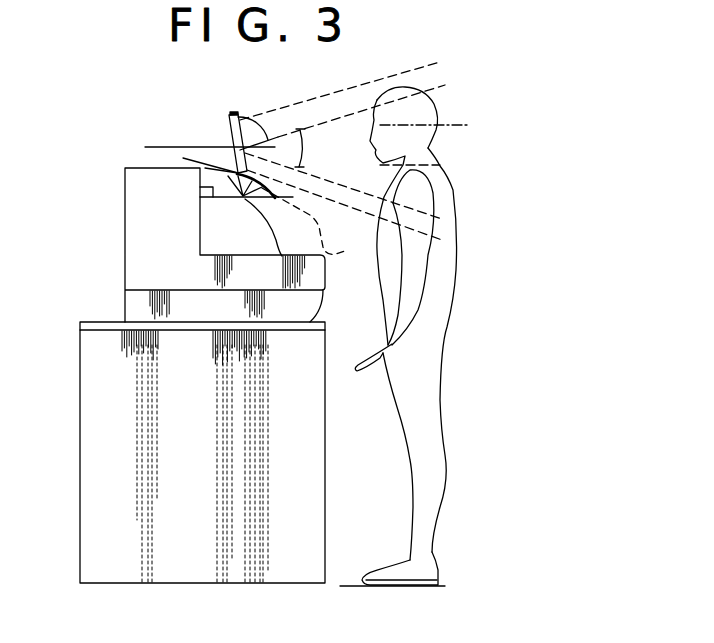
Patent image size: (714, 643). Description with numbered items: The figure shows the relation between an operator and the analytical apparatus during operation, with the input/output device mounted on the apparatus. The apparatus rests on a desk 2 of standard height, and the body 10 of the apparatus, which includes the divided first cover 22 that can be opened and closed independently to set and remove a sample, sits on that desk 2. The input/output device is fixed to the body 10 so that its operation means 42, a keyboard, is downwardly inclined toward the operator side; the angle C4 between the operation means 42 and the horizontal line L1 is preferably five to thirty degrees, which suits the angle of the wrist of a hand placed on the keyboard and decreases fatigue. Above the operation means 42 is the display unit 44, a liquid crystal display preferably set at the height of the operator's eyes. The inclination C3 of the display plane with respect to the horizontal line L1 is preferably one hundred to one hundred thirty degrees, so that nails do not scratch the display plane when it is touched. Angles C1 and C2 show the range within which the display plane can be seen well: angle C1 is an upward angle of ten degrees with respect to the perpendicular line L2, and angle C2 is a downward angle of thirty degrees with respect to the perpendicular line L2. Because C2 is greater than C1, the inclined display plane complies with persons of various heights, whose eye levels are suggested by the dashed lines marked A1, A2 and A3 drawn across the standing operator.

The desk 2 is at (88, 322).
The body 10 is at (313, 303).
The first cover 22 is at (316, 221).
The operation means 42 is at (226, 198).
The display unit 44 is at (228, 119).
The upward angle C1 is at (305, 132).
The downward angle C2 is at (304, 156).
The inclination of the liquid crystal display plane C3 is at (247, 116).
The angle between the operation means and the horizontal line C4 is at (200, 186).
The horizontal line L1 is at (161, 147).
The perpendicular line L2 is at (287, 133).
The tall viewer eye height A1 is at (443, 100).
The medium viewer eye height A2 is at (470, 124).
The short viewer eye height A3 is at (442, 167).